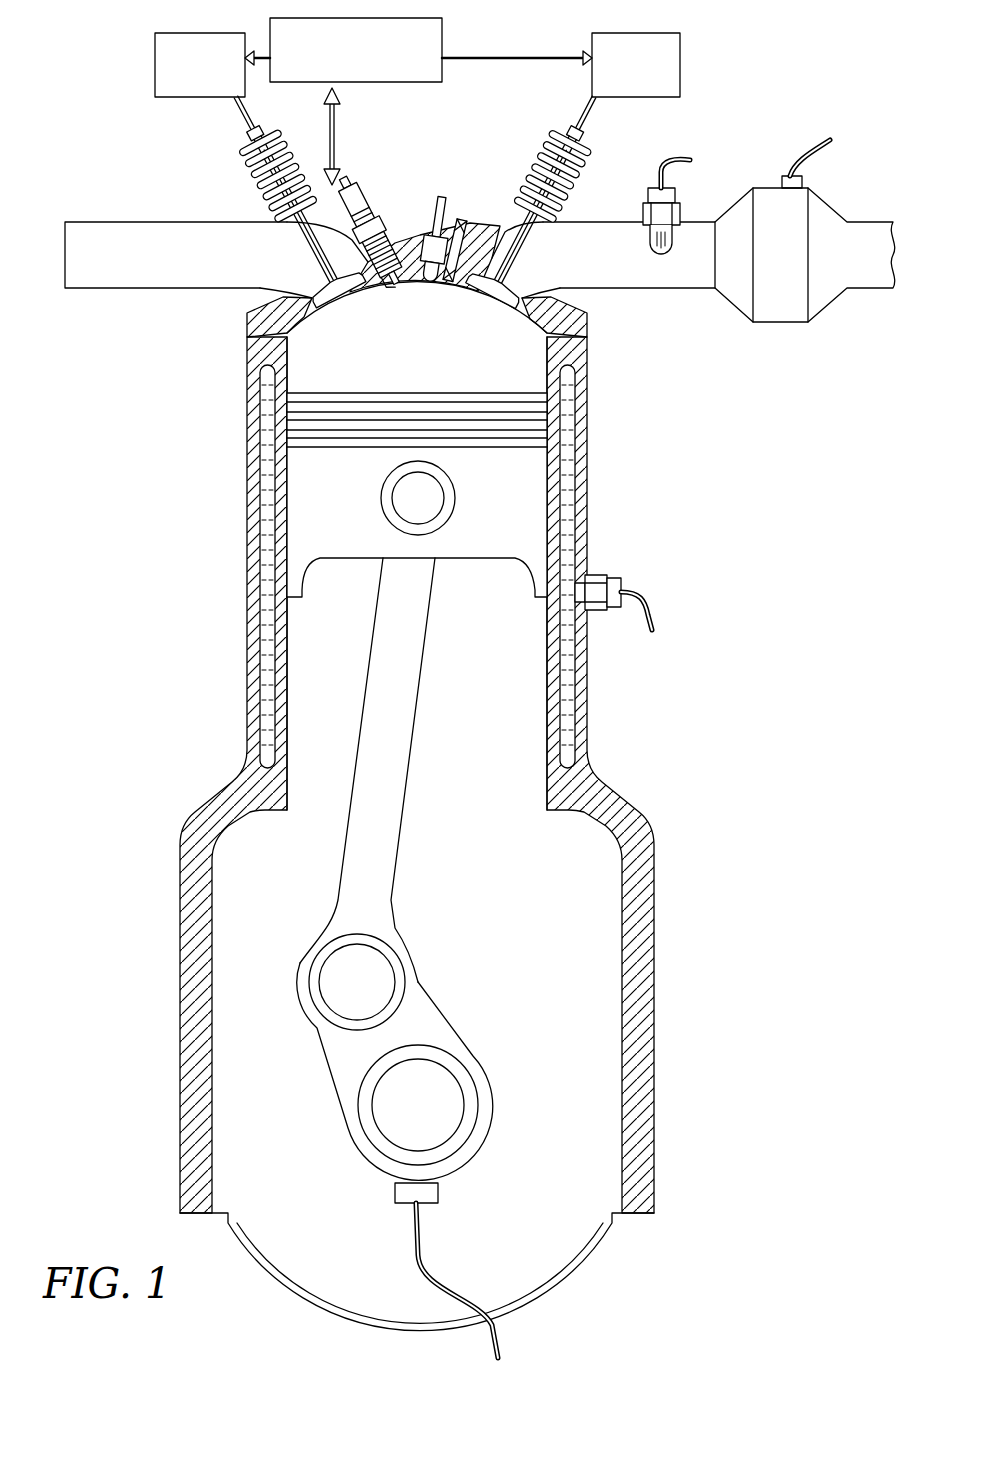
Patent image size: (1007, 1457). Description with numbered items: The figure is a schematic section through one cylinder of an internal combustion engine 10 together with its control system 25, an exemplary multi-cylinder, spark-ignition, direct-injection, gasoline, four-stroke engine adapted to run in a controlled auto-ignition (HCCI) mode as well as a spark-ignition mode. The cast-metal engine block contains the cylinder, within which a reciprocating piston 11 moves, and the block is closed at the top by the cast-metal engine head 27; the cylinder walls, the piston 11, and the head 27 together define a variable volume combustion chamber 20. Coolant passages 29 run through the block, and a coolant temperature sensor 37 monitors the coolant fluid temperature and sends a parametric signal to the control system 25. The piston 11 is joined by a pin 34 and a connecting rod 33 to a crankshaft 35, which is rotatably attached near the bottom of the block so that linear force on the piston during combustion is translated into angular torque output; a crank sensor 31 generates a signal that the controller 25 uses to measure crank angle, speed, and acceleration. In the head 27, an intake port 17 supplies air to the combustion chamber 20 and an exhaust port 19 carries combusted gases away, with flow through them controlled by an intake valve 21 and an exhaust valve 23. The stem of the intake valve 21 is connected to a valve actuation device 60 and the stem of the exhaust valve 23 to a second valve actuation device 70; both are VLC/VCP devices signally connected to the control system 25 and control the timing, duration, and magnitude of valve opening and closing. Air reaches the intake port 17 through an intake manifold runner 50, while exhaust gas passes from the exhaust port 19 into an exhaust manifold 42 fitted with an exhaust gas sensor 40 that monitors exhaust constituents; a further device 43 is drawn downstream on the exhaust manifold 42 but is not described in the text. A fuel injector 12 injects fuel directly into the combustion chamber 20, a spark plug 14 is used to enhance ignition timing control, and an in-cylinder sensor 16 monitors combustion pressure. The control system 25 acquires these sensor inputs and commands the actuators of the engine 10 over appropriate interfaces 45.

The internal combustion engine 10 is at (98, 432).
The piston 11 is at (517, 505).
The fuel injector 12 is at (440, 206).
The spark plug 14 is at (365, 200).
The in-cylinder sensor 16 is at (463, 220).
The intake port 17 is at (305, 277).
The exhaust port 19 is at (545, 278).
The combustion chamber 20 is at (310, 368).
The intake valve 21 is at (313, 250).
The exhaust valve 23 is at (515, 260).
The control system 25 is at (442, 30).
The engine head 27 is at (573, 327).
The coolant passages 29 is at (568, 430).
The crank sensor 31 is at (394, 1190).
The connecting rod 33 is at (393, 668).
The pin 34 is at (410, 497).
The crankshaft 35 is at (357, 1105).
The coolant temperature sensor 37 is at (613, 583).
The exhaust gas sensor 40 is at (680, 215).
The exhaust manifold 42 is at (683, 283).
The catalytic converter 43 is at (788, 176).
The interfaces 45 is at (337, 128).
The intake manifold runner 50 is at (142, 278).
The valve actuation device 60 is at (157, 40).
The second valve actuation device 70 is at (678, 47).